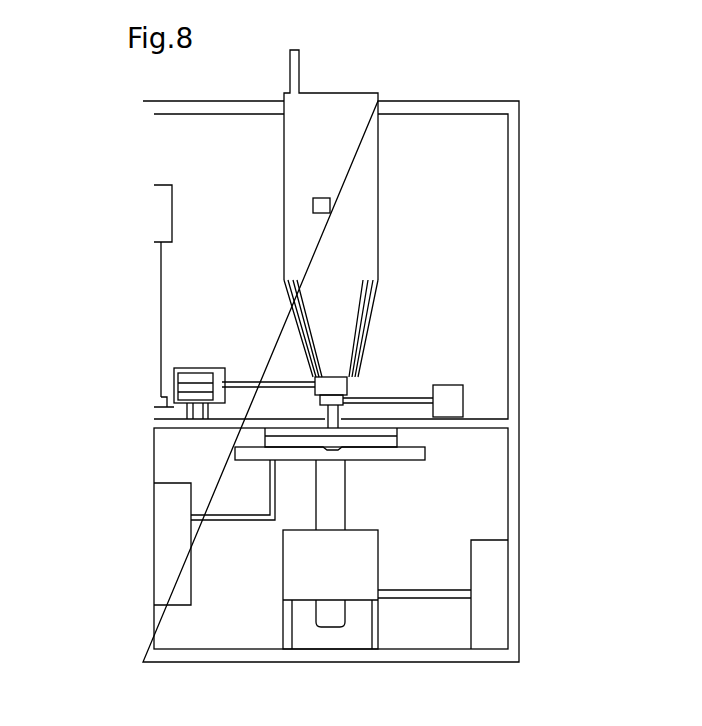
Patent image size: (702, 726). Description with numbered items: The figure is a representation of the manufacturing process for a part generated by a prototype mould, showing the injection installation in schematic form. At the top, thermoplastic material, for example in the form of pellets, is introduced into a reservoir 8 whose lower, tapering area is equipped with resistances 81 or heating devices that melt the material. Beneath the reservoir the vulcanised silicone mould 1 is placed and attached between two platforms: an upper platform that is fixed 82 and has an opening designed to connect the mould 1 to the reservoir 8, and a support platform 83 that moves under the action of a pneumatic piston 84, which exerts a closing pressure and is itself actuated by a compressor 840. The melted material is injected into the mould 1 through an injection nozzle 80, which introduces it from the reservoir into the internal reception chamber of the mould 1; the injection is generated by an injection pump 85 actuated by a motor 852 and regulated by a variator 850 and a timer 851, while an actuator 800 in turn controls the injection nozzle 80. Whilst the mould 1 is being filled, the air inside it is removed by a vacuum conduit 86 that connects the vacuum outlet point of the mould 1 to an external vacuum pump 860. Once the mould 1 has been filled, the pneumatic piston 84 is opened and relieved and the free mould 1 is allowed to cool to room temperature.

The reservoir 8 is at (330, 150).
The resistances 81 is at (372, 320).
The injection nozzle 80 is at (338, 406).
The actuator 800 is at (466, 405).
The fixed upper platform 82 is at (366, 422).
The injection pump 85 is at (320, 388).
The motor 852 is at (193, 383).
The variator 850 is at (168, 216).
The timer 851 is at (164, 412).
The vulcanised silicone mould 1 is at (402, 438).
The support platform 83 is at (380, 456).
The pneumatic piston 84 is at (344, 516).
The compressor 840 is at (494, 617).
The vacuum conduit 86 is at (268, 487).
The vacuum pump 860 is at (172, 543).